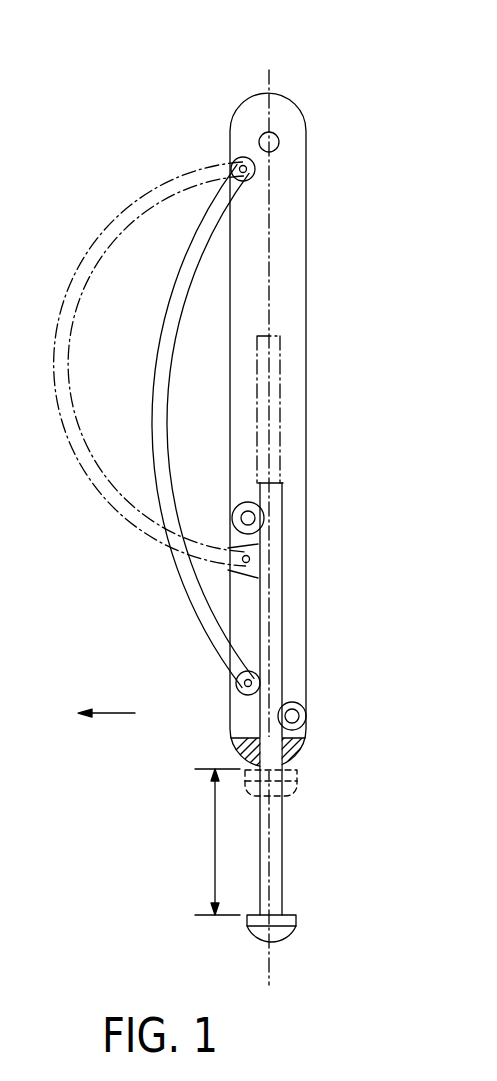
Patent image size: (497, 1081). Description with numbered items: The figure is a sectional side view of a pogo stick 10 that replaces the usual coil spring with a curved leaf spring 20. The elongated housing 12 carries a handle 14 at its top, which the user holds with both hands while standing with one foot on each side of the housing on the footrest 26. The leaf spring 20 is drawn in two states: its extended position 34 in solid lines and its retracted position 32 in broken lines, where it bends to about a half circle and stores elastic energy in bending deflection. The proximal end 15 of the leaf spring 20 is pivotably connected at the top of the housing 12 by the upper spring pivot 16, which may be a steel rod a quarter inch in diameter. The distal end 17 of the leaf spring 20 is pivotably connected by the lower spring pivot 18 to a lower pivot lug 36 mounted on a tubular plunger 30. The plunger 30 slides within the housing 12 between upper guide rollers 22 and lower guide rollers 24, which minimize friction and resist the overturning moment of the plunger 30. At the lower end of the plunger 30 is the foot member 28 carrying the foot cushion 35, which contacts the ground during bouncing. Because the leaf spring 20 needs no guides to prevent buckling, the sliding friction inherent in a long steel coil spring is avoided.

The pogo stick 10 is at (283, 80).
The housing 12 is at (306, 285).
The handle 14 is at (278, 136).
The proximal end 15 is at (262, 208).
The upper spring pivot 16 is at (256, 167).
The distal end 17 is at (236, 683).
The lower spring pivot 18 is at (262, 677).
The leaf spring 20 is at (165, 468).
The upper guide rollers 22 is at (252, 517).
The lower guide rollers 24 is at (300, 708).
The footrest 26 is at (306, 752).
The foot member 28 is at (296, 926).
The tubular plunger 30 is at (283, 862).
The retracted position 32 is at (107, 223).
The extended position 34 is at (153, 385).
The foot cushion 35 is at (296, 945).
The lower pivot lug 36 is at (258, 677).